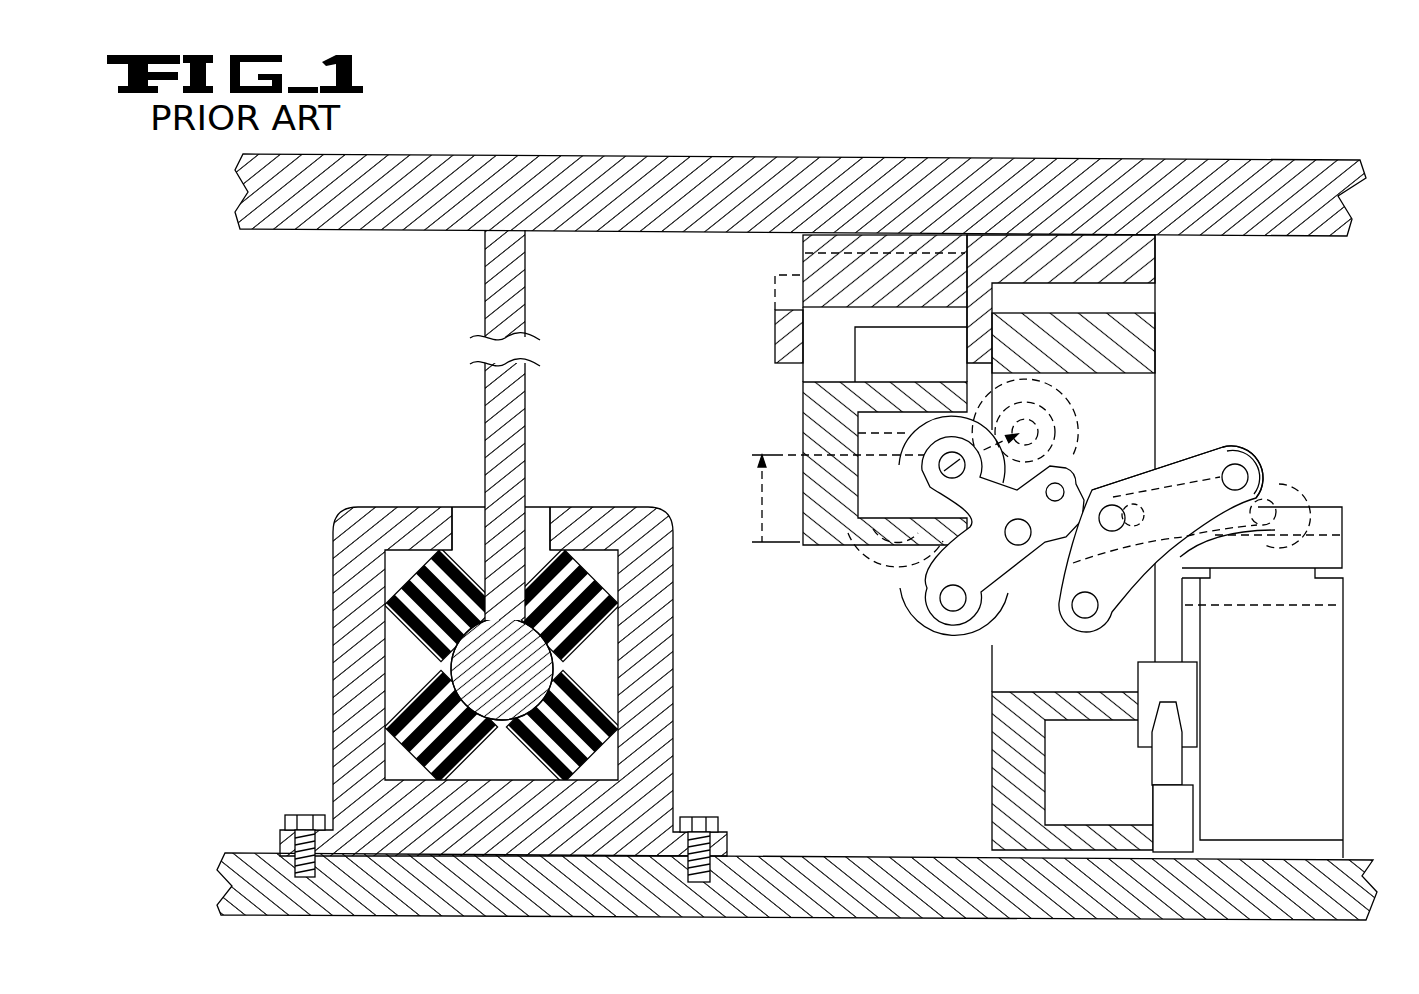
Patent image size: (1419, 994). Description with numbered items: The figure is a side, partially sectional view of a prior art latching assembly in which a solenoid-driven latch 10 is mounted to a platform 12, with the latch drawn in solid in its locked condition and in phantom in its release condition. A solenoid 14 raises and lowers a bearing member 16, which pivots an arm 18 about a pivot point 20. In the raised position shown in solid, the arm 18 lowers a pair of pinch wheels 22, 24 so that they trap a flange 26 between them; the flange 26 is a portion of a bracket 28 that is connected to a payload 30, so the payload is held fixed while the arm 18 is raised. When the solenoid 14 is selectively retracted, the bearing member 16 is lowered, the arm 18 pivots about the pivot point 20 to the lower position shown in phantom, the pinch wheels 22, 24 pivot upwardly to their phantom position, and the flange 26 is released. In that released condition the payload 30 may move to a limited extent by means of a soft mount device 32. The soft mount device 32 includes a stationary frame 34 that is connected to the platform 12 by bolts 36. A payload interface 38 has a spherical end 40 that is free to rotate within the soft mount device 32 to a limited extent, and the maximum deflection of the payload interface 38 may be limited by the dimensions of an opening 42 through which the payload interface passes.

The solenoid-driven latch 10 is at (957, 672).
The platform 12 is at (1358, 866).
The solenoid 14 is at (1182, 815).
The bearing member 16 is at (1308, 506).
The arm 18 is at (1200, 465).
The pivot point 20 is at (1085, 608).
The pinch wheel 22 is at (920, 618).
The pinch wheel 24 is at (820, 420).
The flange 26 is at (875, 545).
The bracket 28 is at (1158, 262).
The payload 30 is at (547, 155).
The soft mount device 32 is at (491, 651).
The stationary frame 34 is at (400, 515).
The bolts 36 is at (298, 812).
The payload interface 38 is at (508, 420).
The spherical end 40 is at (530, 667).
The opening 42 is at (540, 515).